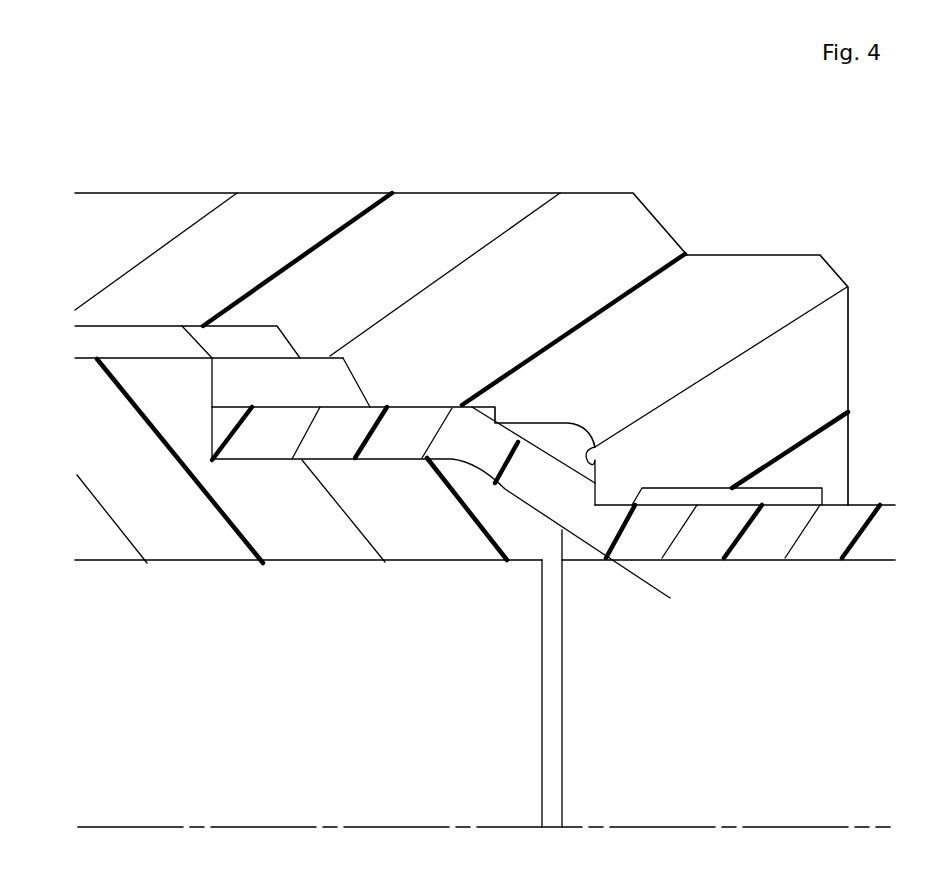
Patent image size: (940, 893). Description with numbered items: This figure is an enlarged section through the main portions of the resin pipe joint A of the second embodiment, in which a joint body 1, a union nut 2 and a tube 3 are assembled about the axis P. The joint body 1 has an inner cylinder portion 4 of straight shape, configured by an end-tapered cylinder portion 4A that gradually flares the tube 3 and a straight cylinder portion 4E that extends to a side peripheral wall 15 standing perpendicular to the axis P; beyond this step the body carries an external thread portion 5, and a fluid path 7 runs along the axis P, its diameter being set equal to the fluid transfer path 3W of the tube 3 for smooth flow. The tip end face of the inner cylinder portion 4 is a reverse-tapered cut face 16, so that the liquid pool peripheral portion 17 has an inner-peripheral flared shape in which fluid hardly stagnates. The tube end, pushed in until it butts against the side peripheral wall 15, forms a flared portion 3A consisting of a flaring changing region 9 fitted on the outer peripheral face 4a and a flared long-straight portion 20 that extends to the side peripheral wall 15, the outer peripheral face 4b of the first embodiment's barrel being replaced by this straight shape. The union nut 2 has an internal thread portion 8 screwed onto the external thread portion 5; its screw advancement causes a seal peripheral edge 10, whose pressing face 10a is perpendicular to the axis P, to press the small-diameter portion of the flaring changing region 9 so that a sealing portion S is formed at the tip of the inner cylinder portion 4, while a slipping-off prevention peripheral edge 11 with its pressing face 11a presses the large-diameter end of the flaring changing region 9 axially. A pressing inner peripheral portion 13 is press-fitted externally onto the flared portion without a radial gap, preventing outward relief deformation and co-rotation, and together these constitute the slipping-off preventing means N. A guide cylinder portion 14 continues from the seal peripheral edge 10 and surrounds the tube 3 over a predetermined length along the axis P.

The joint body 1 is at (88, 367).
The union nut 2 is at (602, 187).
The tube 3 is at (886, 516).
The flared portion 3A is at (328, 406).
The fluid transfer path 3W is at (737, 742).
The inner cylinder portion 4 is at (273, 655).
The end-tapered cylinder portion 4A is at (497, 520).
The straight cylinder portion 4E is at (327, 533).
The outer peripheral face of the end-tapered cylinder portion 4a is at (548, 513).
The outer peripheral face of the straight barrel cylinder portion 4b is at (287, 450).
The external thread portion 5 is at (158, 337).
The fluid path 7 is at (484, 778).
The internal thread portion 8 is at (256, 356).
The flaring changing region 9 is at (540, 460).
The seal peripheral edge 10 is at (678, 617).
The pressing face 10a is at (560, 522).
The slipping-off prevention peripheral edge 11 is at (510, 437).
The pressing face 11a is at (480, 440).
The pressing inner peripheral portion 13 is at (458, 410).
The guide cylinder portion 14 is at (773, 478).
The side peripheral wall 15 is at (218, 383).
The cut face 16 is at (563, 548).
The liquid pool peripheral portion 17 is at (567, 542).
The flared long-straight portion 20 is at (372, 408).
The resin pipe joint A is at (731, 232).
The slipping-off preventing means N is at (578, 275).
The sealing portion S is at (597, 478).
The axis P is at (798, 827).